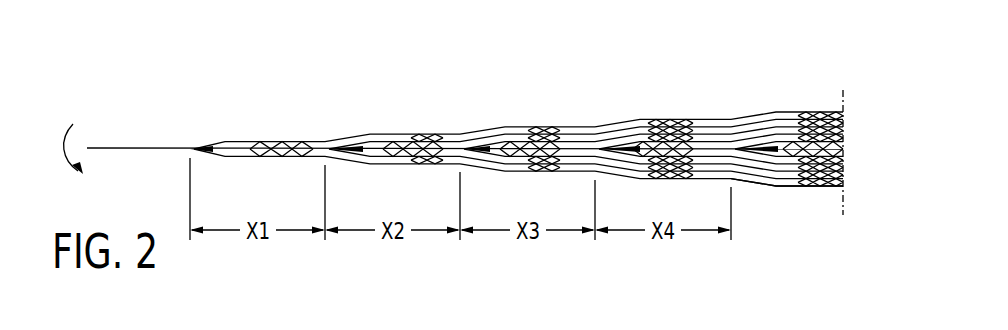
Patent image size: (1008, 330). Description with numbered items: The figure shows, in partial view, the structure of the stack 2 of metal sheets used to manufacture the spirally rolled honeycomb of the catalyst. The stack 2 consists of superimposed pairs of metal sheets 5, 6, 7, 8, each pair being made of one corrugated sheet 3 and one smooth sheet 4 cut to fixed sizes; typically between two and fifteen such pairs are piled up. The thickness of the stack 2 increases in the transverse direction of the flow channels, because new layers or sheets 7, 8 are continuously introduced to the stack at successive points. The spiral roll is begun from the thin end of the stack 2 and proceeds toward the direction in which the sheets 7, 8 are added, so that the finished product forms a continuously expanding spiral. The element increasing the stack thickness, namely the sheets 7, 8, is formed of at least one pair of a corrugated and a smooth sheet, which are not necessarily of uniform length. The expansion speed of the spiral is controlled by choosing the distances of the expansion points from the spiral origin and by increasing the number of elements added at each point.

The stack 2 is at (648, 67).
The corrugated sheet 3 is at (323, 147).
The smooth sheet 4 is at (284, 147).
The metal sheet 5 is at (843, 118).
The metal sheet 6 is at (843, 185).
The metal sheet 7 is at (843, 126).
The metal sheet 8 is at (843, 177).